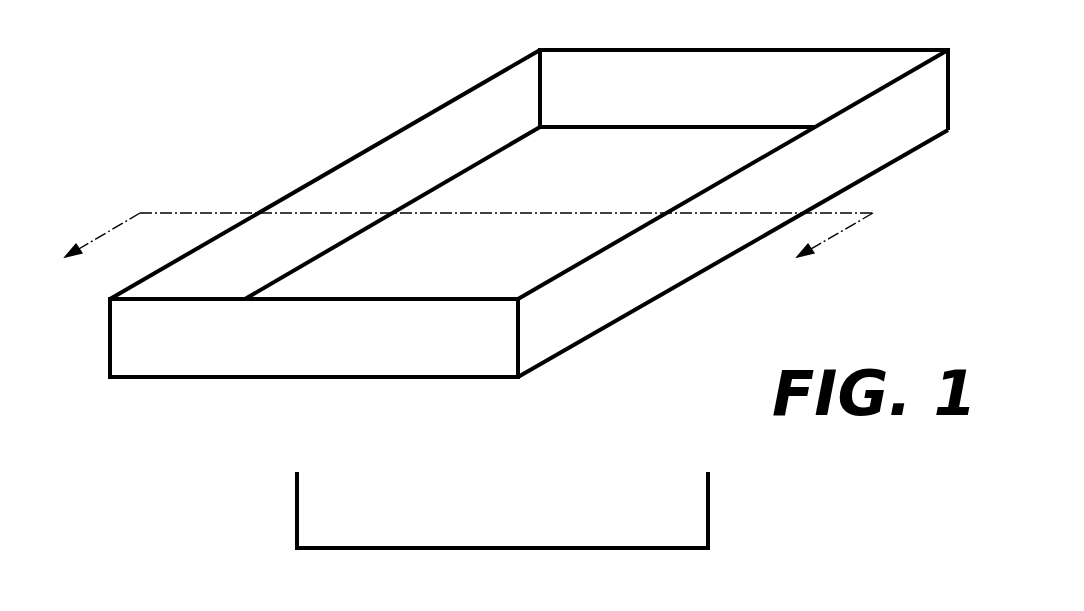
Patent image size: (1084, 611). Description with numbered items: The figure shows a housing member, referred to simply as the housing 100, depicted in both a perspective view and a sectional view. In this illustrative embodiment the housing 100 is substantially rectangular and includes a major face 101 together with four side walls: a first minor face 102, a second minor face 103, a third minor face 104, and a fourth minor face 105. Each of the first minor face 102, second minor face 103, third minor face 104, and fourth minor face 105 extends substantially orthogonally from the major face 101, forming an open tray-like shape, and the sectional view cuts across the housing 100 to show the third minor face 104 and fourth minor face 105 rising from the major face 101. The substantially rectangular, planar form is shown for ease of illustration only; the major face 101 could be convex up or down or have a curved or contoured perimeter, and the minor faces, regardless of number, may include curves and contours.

The housing 100 is at (311, 172).
The major face 101 is at (603, 181).
The first minor face 102 is at (903, 117).
The second minor face 103 is at (765, 72).
The third minor face 104 is at (478, 127).
The fourth minor face 105 is at (220, 348).